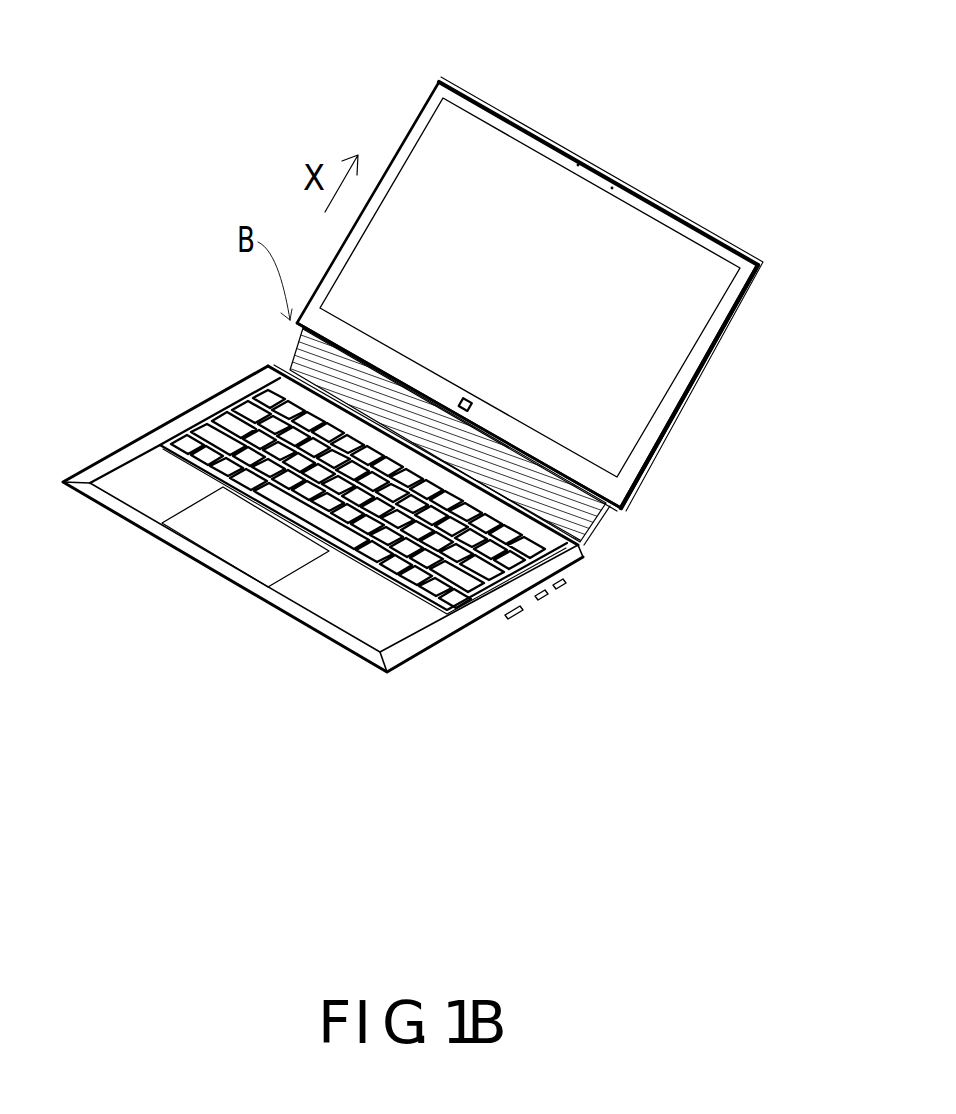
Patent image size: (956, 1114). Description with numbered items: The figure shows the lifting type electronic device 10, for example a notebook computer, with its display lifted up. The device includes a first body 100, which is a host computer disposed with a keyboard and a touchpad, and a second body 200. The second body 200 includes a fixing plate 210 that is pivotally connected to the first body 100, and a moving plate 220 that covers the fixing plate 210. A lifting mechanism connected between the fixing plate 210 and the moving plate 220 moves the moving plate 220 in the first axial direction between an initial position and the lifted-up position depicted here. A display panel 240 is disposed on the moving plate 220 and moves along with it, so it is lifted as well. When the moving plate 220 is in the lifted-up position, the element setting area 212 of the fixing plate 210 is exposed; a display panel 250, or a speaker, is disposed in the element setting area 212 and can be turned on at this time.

The lifting type electronic device 10 is at (199, 104).
The first body 100 is at (132, 478).
The second body 200 is at (600, 125).
The fixing plate 210 is at (597, 523).
The element setting area 212 is at (288, 353).
The moving plate 220 is at (718, 351).
The display panel 240 is at (658, 245).
The display panel 250 is at (566, 473).